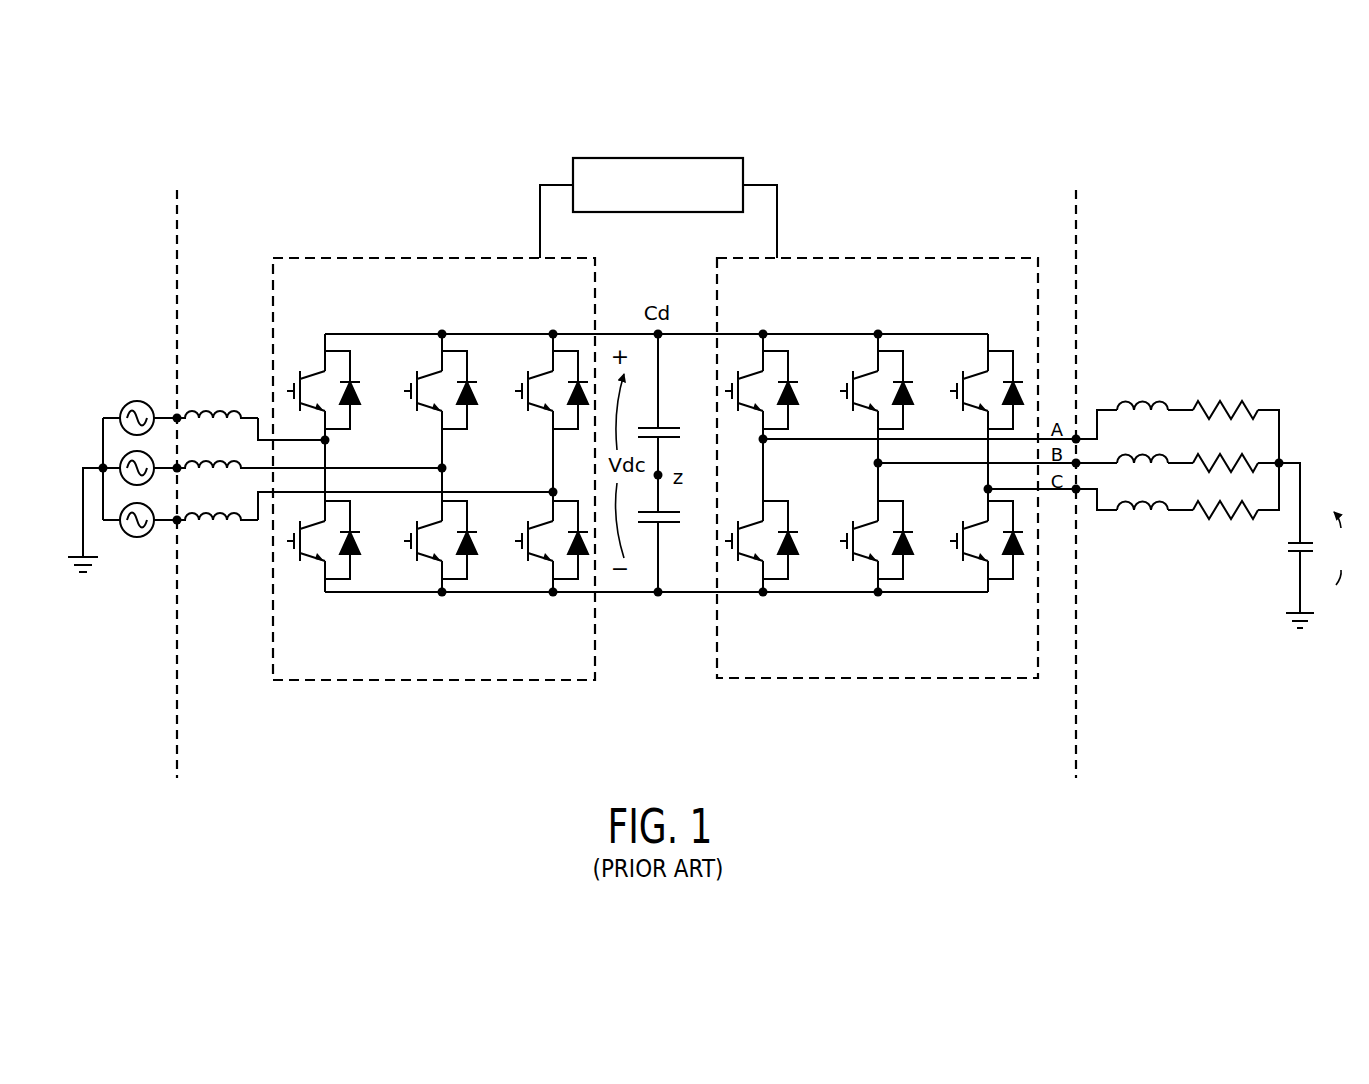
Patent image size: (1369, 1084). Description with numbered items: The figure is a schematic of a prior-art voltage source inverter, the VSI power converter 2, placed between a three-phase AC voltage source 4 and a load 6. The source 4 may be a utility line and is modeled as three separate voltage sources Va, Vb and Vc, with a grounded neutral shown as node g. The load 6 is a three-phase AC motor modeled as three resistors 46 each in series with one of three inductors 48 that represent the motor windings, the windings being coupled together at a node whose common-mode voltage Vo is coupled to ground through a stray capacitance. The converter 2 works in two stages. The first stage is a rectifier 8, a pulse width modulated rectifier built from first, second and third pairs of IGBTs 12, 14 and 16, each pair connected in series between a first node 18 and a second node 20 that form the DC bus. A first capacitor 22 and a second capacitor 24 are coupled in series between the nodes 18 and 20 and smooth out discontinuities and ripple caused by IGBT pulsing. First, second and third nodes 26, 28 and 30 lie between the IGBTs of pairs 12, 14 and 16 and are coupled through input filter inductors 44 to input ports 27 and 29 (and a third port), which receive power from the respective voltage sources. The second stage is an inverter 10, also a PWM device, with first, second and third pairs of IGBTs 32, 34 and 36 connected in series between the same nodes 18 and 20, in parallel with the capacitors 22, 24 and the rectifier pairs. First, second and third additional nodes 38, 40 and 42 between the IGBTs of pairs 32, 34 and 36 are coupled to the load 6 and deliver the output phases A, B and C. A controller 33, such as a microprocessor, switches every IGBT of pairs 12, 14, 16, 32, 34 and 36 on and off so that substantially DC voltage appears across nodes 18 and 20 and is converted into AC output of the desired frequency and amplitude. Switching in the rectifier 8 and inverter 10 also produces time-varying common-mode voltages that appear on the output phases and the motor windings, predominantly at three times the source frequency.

The VSI power converter 2 is at (882, 210).
The three-phase AC voltage source 4 is at (137, 392).
The load 6 is at (1219, 465).
The rectifier 8 is at (440, 255).
The inverter 10 is at (958, 684).
The first pair of IGBTs 12 is at (347, 605).
The second pair of IGBTs 14 is at (437, 605).
The third pair of IGBTs 16 is at (563, 325).
The first node 18 is at (440, 330).
The second node 20 is at (555, 600).
The first capacitor 22 is at (678, 412).
The second capacitor 24 is at (677, 530).
The first node between IGBT pair 26 is at (293, 438).
The first input port 27 is at (180, 420).
The second node between IGBT pair 28 is at (386, 466).
The second input port 29 is at (180, 470).
The third node between IGBT pair 30 is at (500, 490).
The first pair of IGBTs 32 is at (770, 612).
The controller 33 is at (622, 157).
The second pair of IGBTs 34 is at (843, 330).
The third pair of IGBTs 36 is at (1003, 328).
The first additional node 38 is at (815, 441).
The second additional node 40 is at (938, 465).
The third additional node 42 is at (1047, 491).
The input filter inductors 44 is at (226, 540).
The resistors 46 is at (1225, 537).
The load inductance 48 is at (1137, 530).